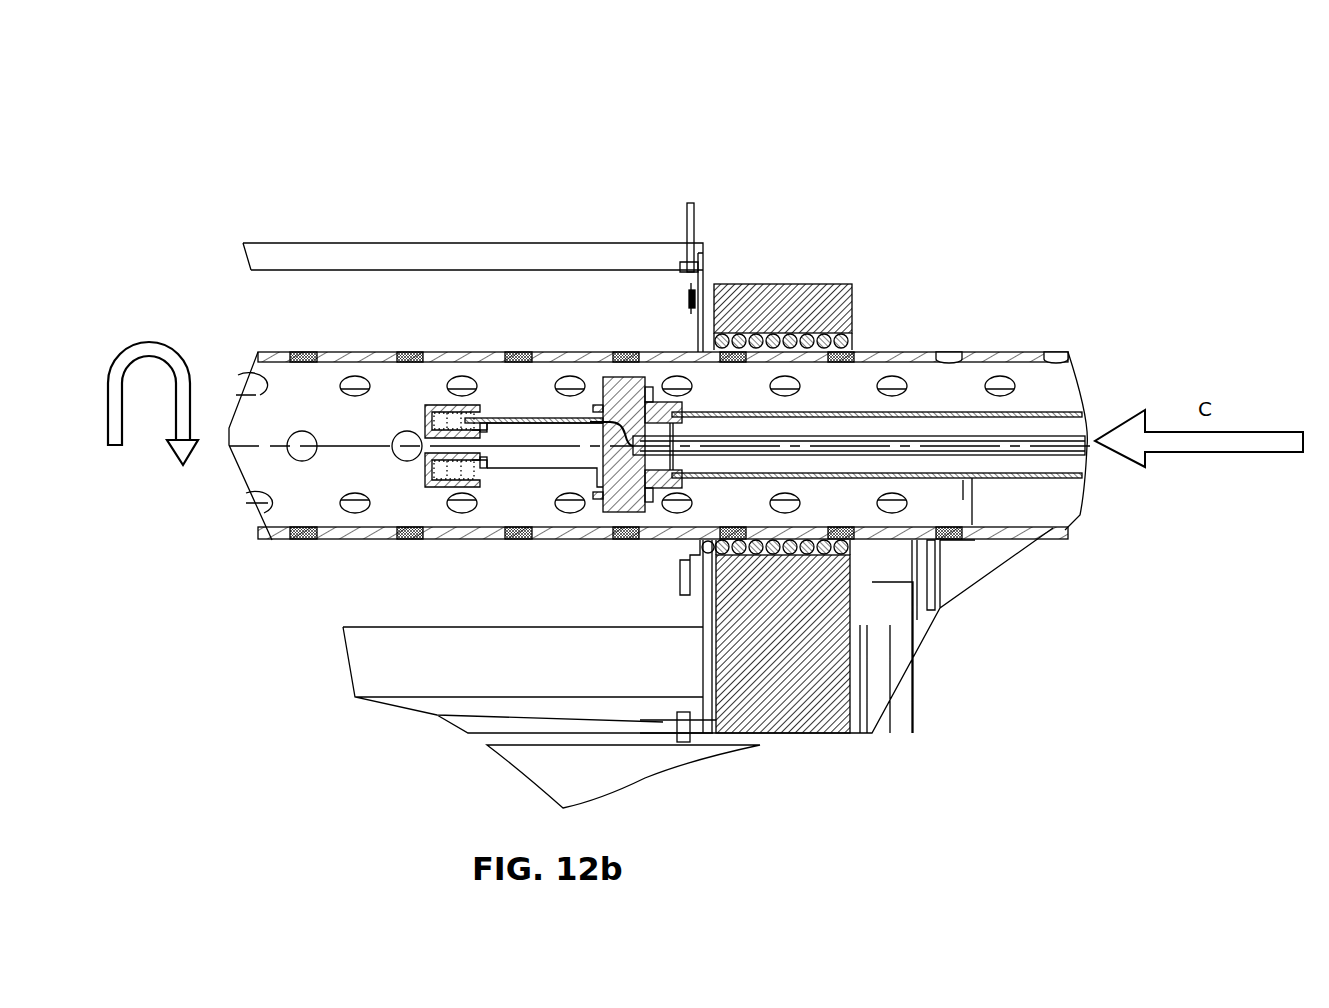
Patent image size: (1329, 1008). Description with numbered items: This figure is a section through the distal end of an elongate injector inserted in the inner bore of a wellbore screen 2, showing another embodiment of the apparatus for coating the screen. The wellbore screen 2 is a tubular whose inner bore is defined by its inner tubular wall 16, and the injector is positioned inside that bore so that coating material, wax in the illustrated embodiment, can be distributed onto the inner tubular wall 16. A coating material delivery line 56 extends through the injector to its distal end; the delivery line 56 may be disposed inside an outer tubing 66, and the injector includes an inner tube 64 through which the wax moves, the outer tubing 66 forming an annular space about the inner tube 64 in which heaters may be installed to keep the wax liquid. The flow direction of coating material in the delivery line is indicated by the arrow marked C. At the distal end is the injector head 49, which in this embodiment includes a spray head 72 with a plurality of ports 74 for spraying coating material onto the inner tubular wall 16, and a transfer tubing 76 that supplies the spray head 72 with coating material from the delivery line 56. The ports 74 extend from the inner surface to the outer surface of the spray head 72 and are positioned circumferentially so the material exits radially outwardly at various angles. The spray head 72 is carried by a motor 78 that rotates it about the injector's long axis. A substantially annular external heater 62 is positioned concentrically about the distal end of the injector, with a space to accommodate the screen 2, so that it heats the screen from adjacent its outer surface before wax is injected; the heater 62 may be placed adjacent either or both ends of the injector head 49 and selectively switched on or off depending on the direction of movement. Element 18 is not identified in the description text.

The wellbore screen 2 is at (343, 541).
The wellbore screen inner tubular wall 16 is at (298, 498).
The housing 18 is at (258, 352).
The injector head 49 is at (596, 515).
The coating material delivery line 56 is at (1047, 447).
The external heater 62 is at (855, 337).
The inner tube 64 is at (897, 437).
The outer tubing 66 is at (805, 413).
The spray head 72 is at (430, 405).
The ports 74 is at (463, 408).
The transfer tubing 76 is at (505, 418).
The motor 78 is at (535, 445).